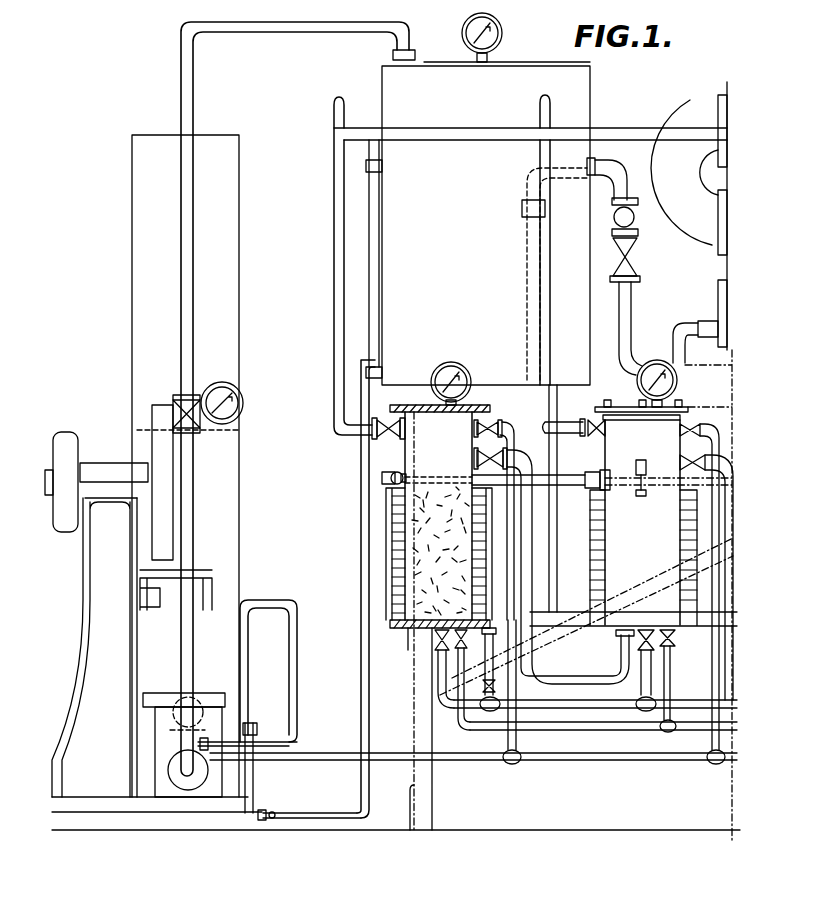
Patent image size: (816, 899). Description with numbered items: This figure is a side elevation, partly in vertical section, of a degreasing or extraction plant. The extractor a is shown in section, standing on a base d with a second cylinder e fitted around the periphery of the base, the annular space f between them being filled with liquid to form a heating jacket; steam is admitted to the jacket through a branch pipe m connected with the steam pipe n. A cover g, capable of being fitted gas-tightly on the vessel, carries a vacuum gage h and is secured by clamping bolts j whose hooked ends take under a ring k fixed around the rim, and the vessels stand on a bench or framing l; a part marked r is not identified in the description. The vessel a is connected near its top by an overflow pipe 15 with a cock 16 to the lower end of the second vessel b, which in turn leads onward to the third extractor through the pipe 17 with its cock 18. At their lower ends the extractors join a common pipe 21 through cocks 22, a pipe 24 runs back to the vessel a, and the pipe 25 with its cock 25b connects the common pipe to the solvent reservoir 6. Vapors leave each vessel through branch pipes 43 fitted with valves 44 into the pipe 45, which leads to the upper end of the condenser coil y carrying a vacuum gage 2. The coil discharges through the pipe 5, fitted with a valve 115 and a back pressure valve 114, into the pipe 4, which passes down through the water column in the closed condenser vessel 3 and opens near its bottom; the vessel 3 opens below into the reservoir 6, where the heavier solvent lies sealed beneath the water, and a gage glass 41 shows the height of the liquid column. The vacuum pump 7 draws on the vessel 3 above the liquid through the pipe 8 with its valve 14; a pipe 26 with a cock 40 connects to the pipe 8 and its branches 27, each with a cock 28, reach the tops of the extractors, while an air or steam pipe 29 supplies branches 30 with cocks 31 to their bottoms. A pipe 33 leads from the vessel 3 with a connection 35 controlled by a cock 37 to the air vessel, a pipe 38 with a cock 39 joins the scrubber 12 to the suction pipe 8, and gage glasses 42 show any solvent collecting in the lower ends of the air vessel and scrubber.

The vacuum gage 2 is at (502, 33).
The closed vessel 3 is at (486, 223).
The pipe 4 is at (527, 253).
The pipe 5 is at (633, 293).
The reservoir 6 is at (557, 447).
The suction or vacuum pump 7 is at (207, 596).
The pipe 8 is at (190, 447).
The scrubbing vessel 12 is at (239, 216).
The valve 14 is at (178, 420).
The overflow pipe 15 is at (532, 520).
The cock 16 is at (554, 560).
The pipe 17 is at (722, 514).
The cock 18 is at (706, 572).
The common pipe 21 is at (450, 721).
The cock 22 is at (440, 640).
The pipe 24 is at (667, 572).
The pipe 25 is at (494, 667).
The cock 25b is at (478, 686).
The pipe 26 is at (466, 762).
The branch 27 is at (518, 688).
The cock 28 is at (615, 581).
The air or steam pipe 29 is at (612, 730).
The branch 30 is at (603, 720).
The cock 31 is at (462, 640).
The pipe 33 is at (361, 730).
The connection 35 is at (334, 813).
The cock 37 is at (268, 815).
The pipe 38 is at (297, 684).
The cock 39 is at (202, 740).
The cock 40 is at (258, 756).
The gage glass 41 is at (369, 218).
The gage glass 42 is at (256, 787).
The branch pipe 43 is at (343, 222).
The valve 44 is at (585, 412).
The pipe 45 is at (654, 120).
The back pressure valve 114 is at (614, 217).
The valve 115 is at (616, 256).
The extractor or degreasing vessel a is at (438, 516).
The extractor or degreasing vessel b is at (633, 523).
The base d is at (430, 632).
The second cylinder e is at (386, 548).
The annular space f is at (394, 633).
The cover g is at (402, 406).
The vacuum gage h is at (470, 368).
The clamping bolt j is at (628, 424).
The ring k is at (480, 408).
The bench or framing l is at (412, 718).
The branch pipe m is at (392, 520).
The steam pipe n is at (543, 486).
The cover r is at (608, 442).
The condenser coil y is at (689, 221).